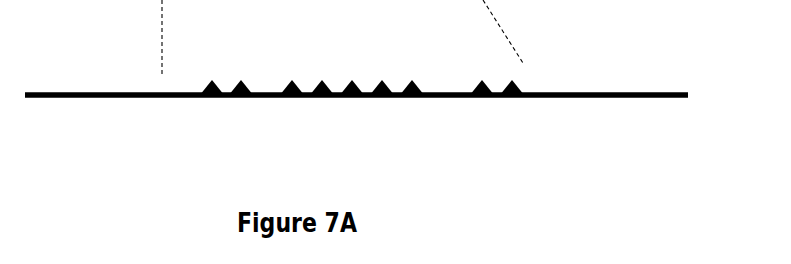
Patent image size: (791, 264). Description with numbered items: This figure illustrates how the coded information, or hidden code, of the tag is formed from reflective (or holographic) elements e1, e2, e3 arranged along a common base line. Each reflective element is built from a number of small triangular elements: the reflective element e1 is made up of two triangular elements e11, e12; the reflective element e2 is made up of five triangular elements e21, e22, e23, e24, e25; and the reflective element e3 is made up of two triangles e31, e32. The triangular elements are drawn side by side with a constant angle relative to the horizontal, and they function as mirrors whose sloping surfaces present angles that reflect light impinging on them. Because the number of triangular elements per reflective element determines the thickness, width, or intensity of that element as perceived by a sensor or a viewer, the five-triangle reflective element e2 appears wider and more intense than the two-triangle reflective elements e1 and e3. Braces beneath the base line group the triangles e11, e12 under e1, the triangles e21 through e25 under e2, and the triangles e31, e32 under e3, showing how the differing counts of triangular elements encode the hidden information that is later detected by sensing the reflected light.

The reflective element e1 is at (216, 112).
The triangular element e11 is at (205, 85).
The triangular element e12 is at (258, 110).
The reflective element e2 is at (360, 95).
The triangular element e21 is at (287, 84).
The triangular element e22 is at (321, 81).
The triangular element e23 is at (353, 80).
The triangular element e24 is at (388, 82).
The triangular element e25 is at (424, 69).
The reflective element e3 is at (527, 96).
The triangular element e31 is at (477, 85).
The triangular element e32 is at (546, 67).